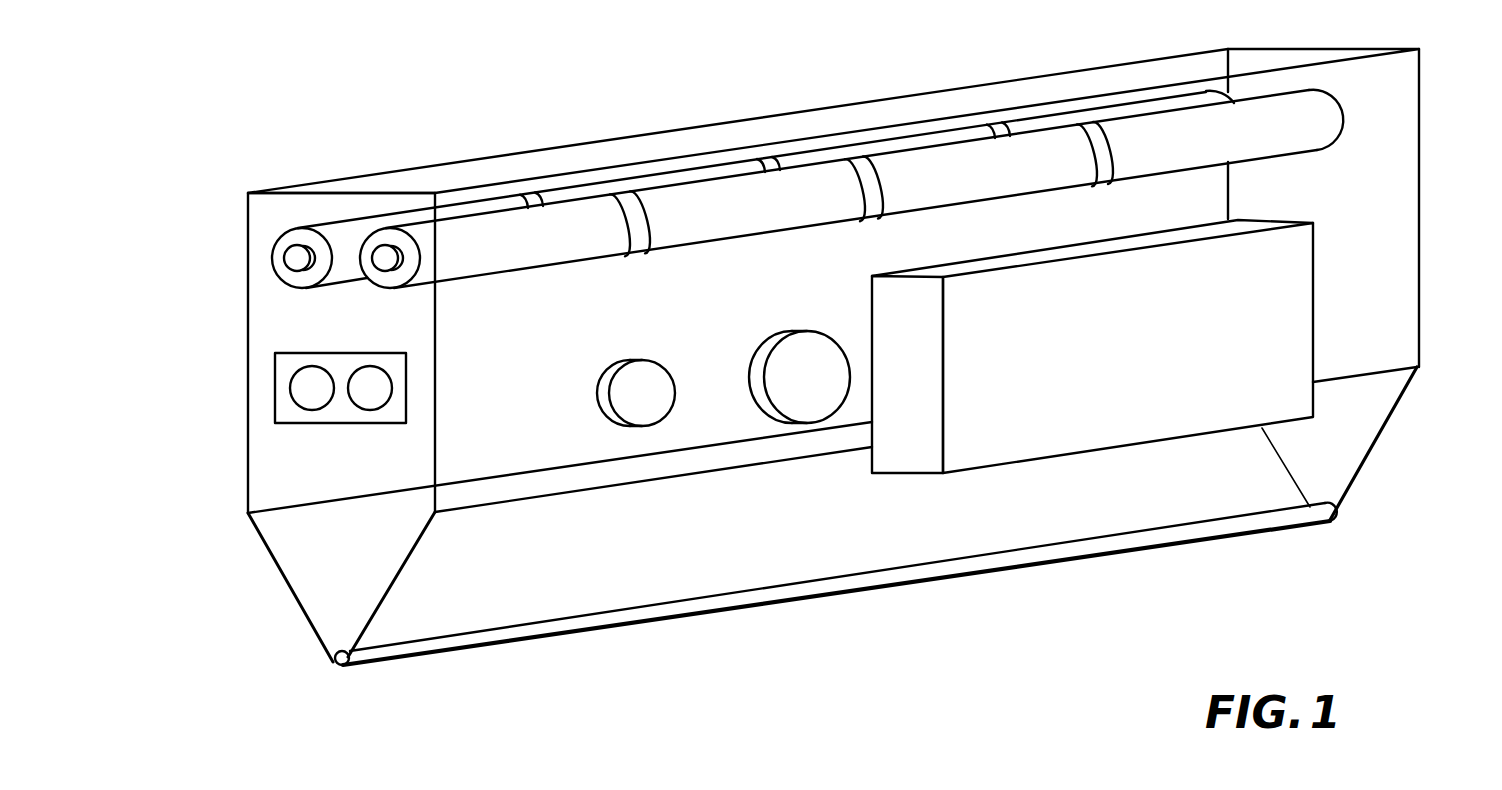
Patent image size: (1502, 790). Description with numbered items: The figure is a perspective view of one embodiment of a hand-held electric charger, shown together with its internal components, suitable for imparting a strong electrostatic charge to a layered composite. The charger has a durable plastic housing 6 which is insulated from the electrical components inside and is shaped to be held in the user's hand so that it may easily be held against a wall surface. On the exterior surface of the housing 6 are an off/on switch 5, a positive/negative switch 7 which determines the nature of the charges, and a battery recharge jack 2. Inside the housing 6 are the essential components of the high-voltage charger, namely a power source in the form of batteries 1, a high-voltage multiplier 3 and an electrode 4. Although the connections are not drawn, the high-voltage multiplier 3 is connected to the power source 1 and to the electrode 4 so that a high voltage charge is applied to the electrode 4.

The power source (batteries) 1 is at (278, 240).
The battery recharge jack 2 is at (275, 364).
The high-voltage multiplier 3 is at (1258, 295).
The electrode 4 is at (1277, 510).
The off/on switch 5 is at (790, 367).
The housing 6 is at (248, 446).
The positive/negative switch 7 is at (627, 385).